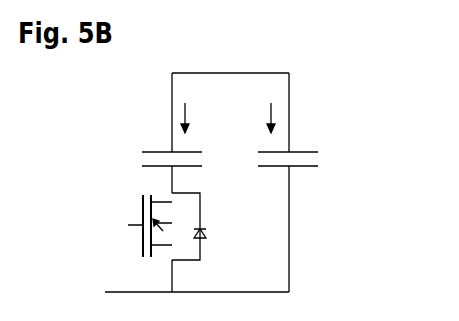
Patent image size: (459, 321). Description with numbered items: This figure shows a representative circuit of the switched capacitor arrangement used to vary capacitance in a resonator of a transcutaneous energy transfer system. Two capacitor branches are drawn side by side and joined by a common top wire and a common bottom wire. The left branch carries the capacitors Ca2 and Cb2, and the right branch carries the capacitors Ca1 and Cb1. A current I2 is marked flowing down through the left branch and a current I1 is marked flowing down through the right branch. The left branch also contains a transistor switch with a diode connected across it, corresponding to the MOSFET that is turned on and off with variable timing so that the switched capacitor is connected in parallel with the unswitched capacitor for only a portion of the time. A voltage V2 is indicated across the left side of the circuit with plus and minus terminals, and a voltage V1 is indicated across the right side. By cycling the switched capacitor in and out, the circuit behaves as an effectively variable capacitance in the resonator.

The current I2 is at (186, 106).
The current I1 is at (272, 106).
The voltage V2 is at (53, 137).
The voltage V1 is at (404, 153).